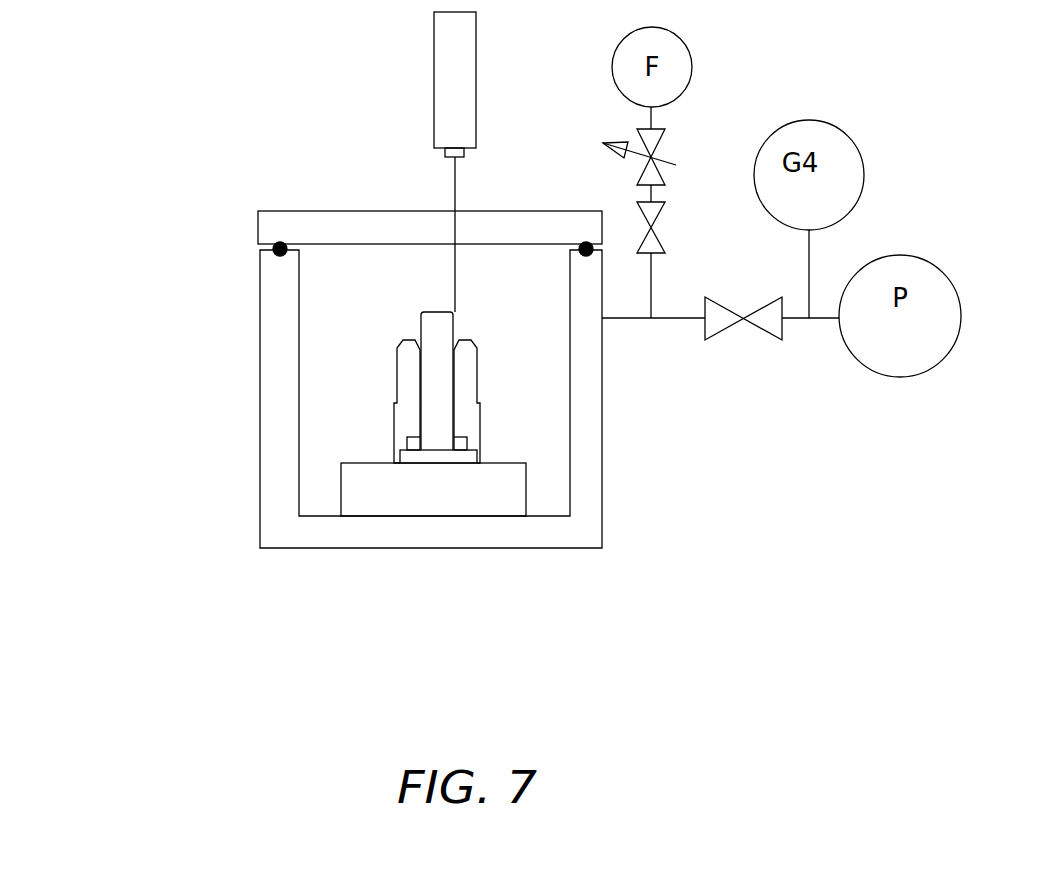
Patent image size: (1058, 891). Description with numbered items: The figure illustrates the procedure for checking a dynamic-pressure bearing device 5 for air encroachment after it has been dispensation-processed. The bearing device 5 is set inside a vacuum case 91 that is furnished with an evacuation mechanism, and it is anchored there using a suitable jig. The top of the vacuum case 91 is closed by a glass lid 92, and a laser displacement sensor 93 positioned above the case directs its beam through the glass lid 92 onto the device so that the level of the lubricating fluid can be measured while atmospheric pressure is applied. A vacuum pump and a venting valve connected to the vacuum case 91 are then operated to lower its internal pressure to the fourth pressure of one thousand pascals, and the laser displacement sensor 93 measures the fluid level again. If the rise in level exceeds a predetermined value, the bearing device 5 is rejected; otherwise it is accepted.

The vacuum case 91 is at (238, 278).
The glass lid 92 is at (375, 225).
The laser displacement sensor 93 is at (444, 56).
The dynamic-pressure bearing device 5 is at (503, 390).